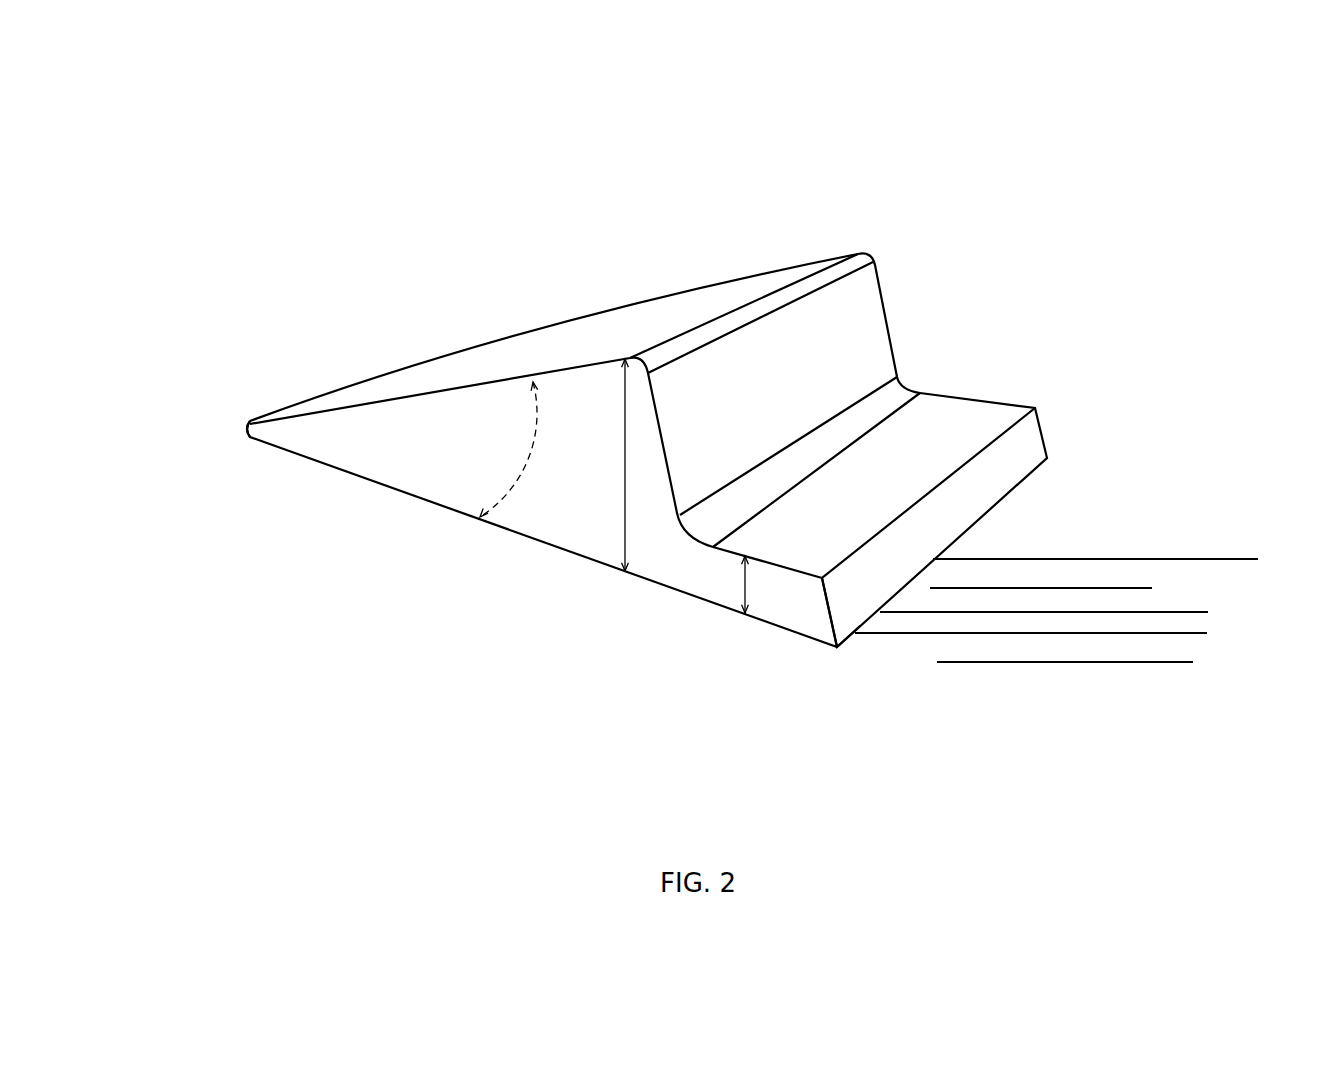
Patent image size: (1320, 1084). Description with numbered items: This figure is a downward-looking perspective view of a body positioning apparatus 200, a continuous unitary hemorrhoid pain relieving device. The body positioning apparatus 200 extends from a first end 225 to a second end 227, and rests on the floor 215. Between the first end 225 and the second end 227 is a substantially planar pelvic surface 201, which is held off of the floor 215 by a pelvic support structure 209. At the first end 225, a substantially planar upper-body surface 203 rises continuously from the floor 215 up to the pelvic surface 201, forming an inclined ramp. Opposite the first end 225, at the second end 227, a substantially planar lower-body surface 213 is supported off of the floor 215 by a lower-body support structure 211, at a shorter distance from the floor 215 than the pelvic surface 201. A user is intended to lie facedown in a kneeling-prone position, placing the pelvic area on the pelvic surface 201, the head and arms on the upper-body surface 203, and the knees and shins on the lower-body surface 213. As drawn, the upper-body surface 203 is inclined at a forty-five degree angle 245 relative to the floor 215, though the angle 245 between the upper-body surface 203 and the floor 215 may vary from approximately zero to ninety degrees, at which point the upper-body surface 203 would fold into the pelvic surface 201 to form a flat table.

The body positioning apparatus 200 is at (1062, 172).
The pelvic surface 201 is at (827, 275).
The upper-body surface 203 is at (483, 357).
The pelvic support structure 209 is at (625, 520).
The lower-body support structure 211 is at (742, 610).
The lower-body surface 213 is at (938, 425).
The floor 215 is at (1082, 633).
The first end 225 is at (245, 443).
The second end 227 is at (820, 662).
The angle 245 is at (568, 482).